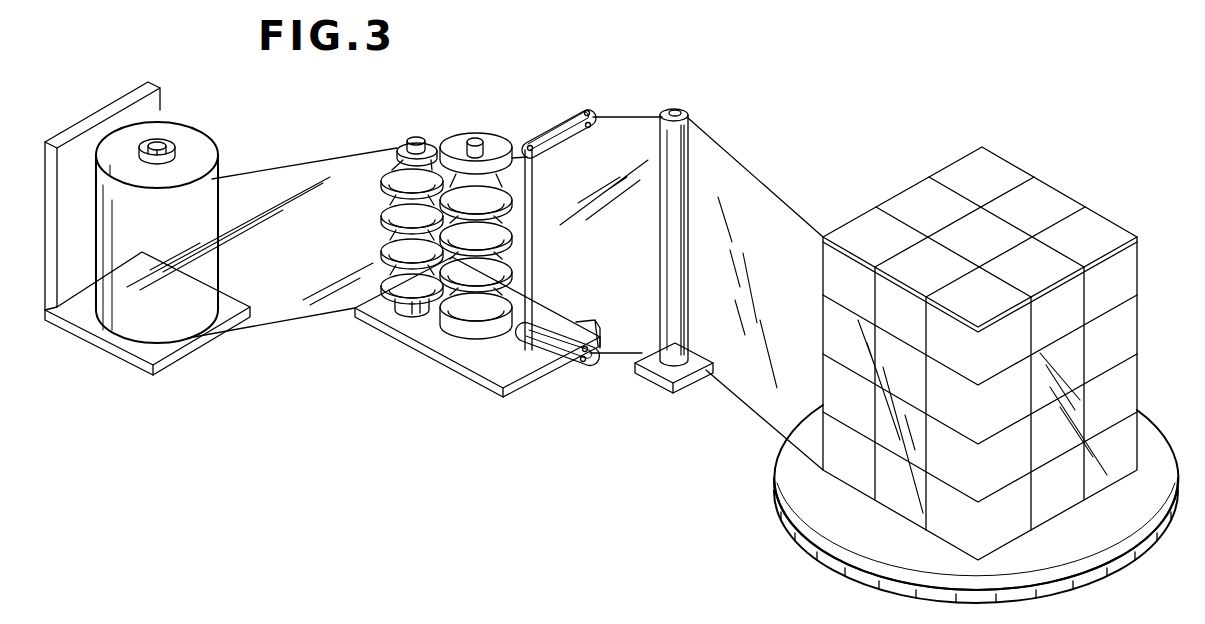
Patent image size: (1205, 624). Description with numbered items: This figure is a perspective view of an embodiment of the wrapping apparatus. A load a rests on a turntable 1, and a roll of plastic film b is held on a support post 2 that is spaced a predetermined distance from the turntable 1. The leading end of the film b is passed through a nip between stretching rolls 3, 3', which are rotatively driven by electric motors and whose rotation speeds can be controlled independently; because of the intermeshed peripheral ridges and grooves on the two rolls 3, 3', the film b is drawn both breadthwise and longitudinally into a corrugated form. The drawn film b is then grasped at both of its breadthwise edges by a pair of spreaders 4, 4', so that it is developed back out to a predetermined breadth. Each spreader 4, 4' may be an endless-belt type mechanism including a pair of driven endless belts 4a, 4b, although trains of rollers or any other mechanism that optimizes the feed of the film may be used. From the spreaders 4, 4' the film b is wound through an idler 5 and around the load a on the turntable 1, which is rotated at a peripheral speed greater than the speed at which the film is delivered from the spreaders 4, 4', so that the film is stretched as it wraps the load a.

The turntable 1 is at (1152, 437).
The support post 2 is at (166, 141).
The stretching roll 3 is at (477, 239).
The stretching roll 3' is at (468, 204).
The spreader 4 is at (563, 205).
The driven endless belt 4a is at (570, 113).
The driven endless belt 4b is at (574, 146).
The spreader 4' is at (568, 377).
The idler 5 is at (688, 112).
The load a is at (998, 168).
The plastic film b is at (297, 323).